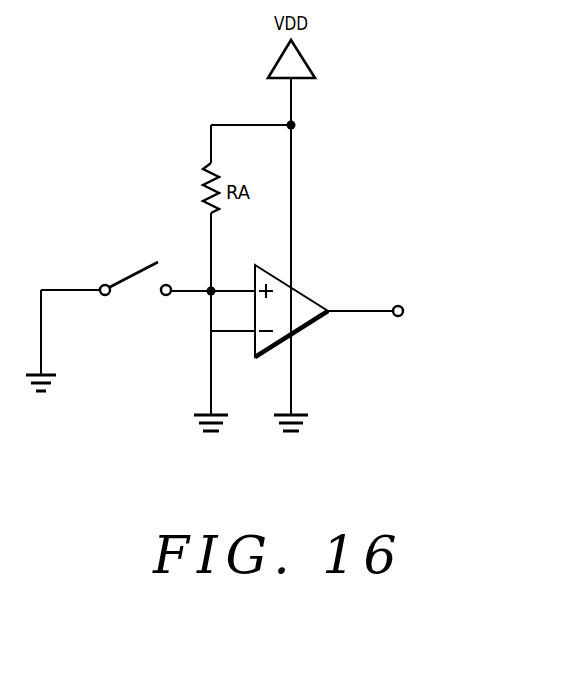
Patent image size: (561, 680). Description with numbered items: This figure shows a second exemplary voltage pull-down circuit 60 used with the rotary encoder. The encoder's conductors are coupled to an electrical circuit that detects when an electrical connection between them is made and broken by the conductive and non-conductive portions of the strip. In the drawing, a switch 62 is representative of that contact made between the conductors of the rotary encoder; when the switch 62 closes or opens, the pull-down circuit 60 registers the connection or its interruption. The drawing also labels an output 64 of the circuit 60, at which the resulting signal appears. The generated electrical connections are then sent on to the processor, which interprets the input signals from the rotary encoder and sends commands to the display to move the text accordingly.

The voltage pull-down circuit 60 is at (384, 205).
The switch 62 is at (143, 268).
The bit output terminal 64 is at (400, 316).